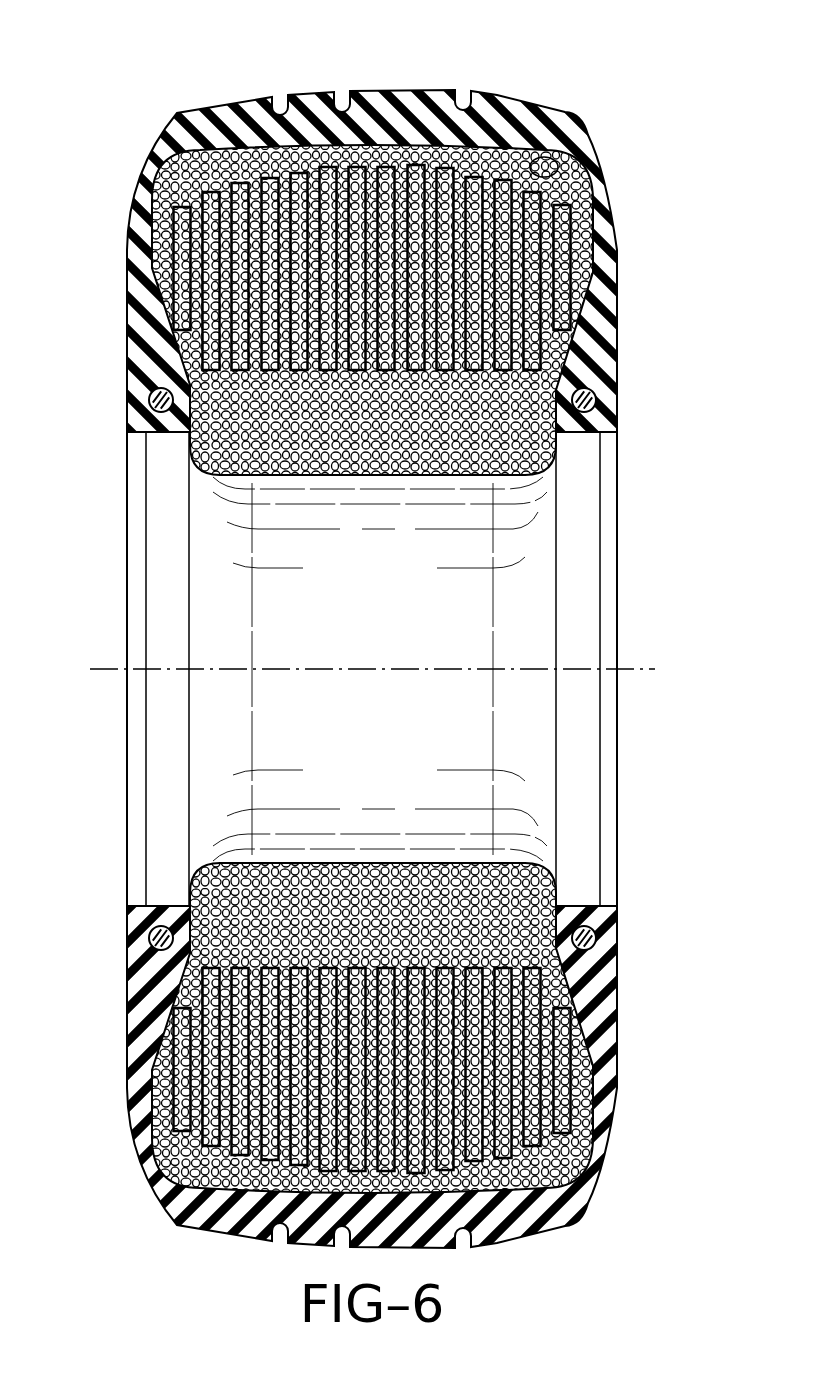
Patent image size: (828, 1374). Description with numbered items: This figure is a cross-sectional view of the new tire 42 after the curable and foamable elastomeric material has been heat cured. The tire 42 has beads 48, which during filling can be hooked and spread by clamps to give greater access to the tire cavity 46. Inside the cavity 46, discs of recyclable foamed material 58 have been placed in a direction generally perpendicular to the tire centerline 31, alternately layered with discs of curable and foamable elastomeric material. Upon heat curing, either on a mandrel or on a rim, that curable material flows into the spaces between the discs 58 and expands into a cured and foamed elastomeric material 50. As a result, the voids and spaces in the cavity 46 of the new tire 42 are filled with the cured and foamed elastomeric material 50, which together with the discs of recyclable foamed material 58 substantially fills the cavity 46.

The tire centerline 31 is at (313, 669).
The new tire 42 is at (203, 108).
The tire cavity 46 is at (552, 172).
The beads 48 is at (150, 410).
The cured and foamed elastomeric material 50 is at (190, 190).
The discs of recyclable foamed material 58 is at (238, 298).